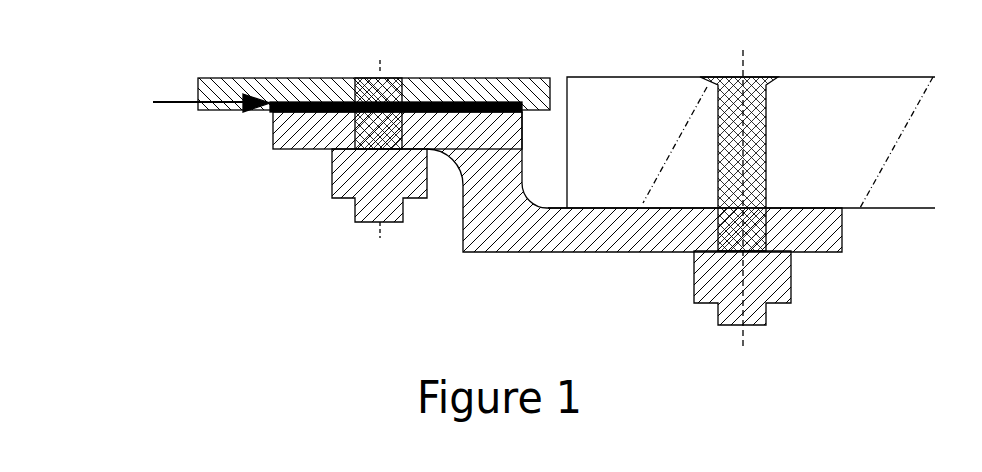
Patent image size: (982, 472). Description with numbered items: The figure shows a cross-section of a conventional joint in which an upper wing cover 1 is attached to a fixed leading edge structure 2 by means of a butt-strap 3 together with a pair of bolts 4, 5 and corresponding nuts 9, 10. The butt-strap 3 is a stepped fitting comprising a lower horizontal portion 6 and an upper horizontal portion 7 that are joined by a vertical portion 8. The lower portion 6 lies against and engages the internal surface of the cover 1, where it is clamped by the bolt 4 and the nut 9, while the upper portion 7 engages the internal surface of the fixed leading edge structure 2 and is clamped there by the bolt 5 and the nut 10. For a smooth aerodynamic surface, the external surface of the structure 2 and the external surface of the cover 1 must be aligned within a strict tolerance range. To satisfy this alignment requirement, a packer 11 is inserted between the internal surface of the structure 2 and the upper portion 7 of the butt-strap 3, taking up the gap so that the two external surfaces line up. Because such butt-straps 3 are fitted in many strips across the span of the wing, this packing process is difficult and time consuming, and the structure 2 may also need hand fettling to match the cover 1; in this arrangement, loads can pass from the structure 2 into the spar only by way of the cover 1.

The upper wing cover 1 is at (890, 95).
The fixed leading edge structure 2 is at (292, 87).
The butt-strap 3 is at (533, 287).
The bolt 4 is at (742, 142).
The bolt 5 is at (380, 92).
The lower horizontal portion 6 is at (665, 232).
The upper horizontal portion 7 is at (297, 137).
The vertical portion 8 is at (485, 188).
The nut 9 is at (773, 280).
The nut 10 is at (360, 188).
The packer 11 is at (315, 98).